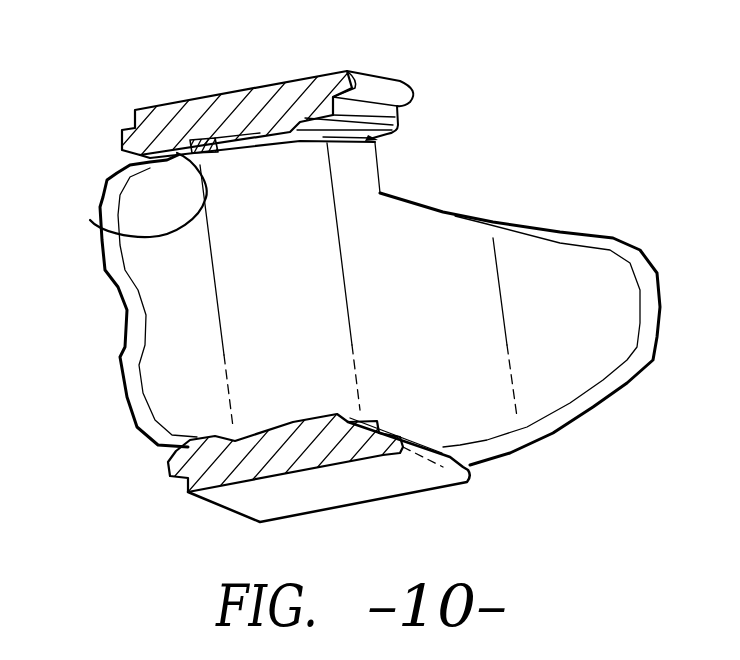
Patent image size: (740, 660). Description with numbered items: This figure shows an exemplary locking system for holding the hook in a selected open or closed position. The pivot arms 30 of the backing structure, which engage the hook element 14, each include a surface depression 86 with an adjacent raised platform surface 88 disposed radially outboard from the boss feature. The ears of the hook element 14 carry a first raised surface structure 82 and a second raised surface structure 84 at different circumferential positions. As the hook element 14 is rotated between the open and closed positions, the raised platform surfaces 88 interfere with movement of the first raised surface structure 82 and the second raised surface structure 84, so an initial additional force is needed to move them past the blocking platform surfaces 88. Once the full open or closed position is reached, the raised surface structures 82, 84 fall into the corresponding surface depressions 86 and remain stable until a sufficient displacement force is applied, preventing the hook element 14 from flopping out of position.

The hook element 14 is at (616, 230).
The pivot arms 30 is at (177, 100).
The first raised surface structure 82 is at (360, 132).
The second raised surface structure 84 is at (223, 153).
The surface depressions 86 is at (327, 125).
The raised platform surfaces 88 is at (178, 153).